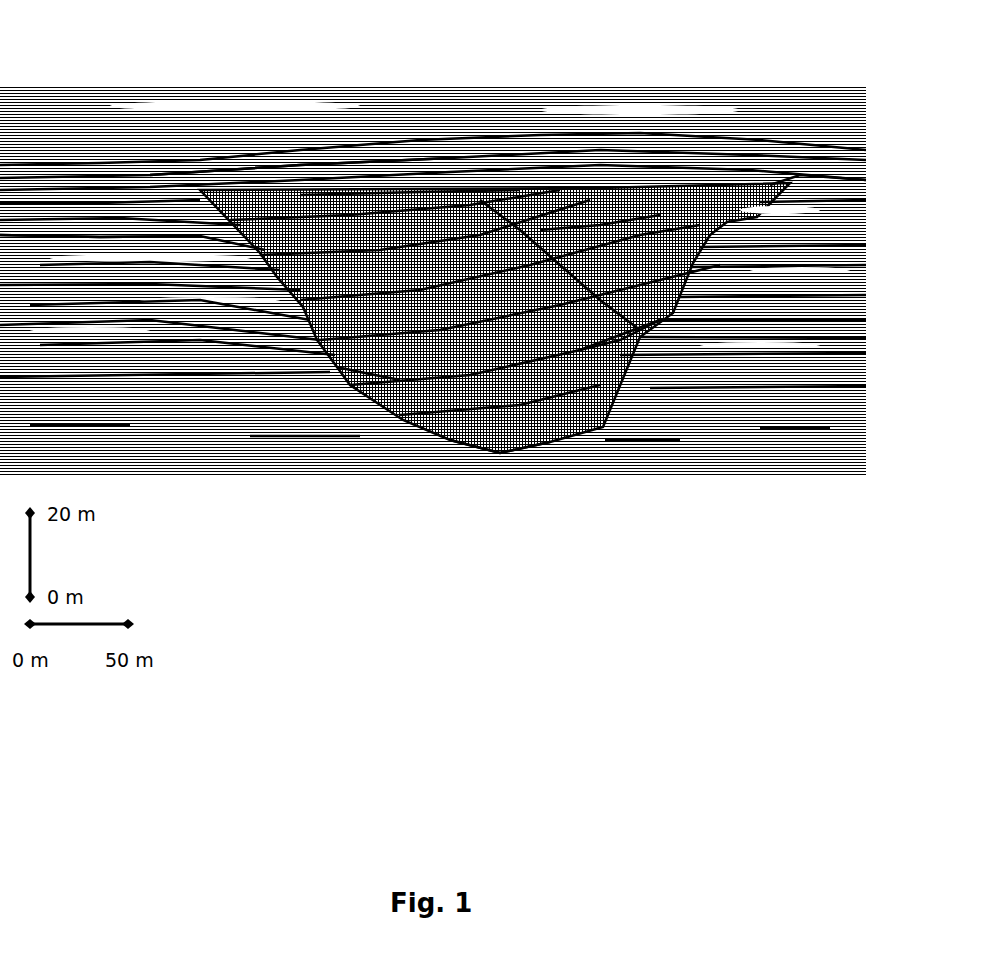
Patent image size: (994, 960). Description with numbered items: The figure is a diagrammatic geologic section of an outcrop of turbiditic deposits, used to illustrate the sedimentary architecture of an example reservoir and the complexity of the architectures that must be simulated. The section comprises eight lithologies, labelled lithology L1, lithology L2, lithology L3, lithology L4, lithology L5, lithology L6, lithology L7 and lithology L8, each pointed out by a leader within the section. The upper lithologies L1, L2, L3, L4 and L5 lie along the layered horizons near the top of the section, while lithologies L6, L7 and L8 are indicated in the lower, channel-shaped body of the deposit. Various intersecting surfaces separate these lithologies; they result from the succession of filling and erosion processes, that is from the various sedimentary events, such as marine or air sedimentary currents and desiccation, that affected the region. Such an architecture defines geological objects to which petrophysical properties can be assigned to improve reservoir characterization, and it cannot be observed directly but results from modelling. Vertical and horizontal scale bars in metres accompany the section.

The lithology L1 is at (64, 232).
The lithology L2 is at (255, 160).
The lithology L3 is at (410, 198).
The lithology L4 is at (598, 225).
The lithology L5 is at (813, 172).
The lithology L6 is at (352, 370).
The lithology L7 is at (503, 452).
The lithology L8 is at (650, 425).